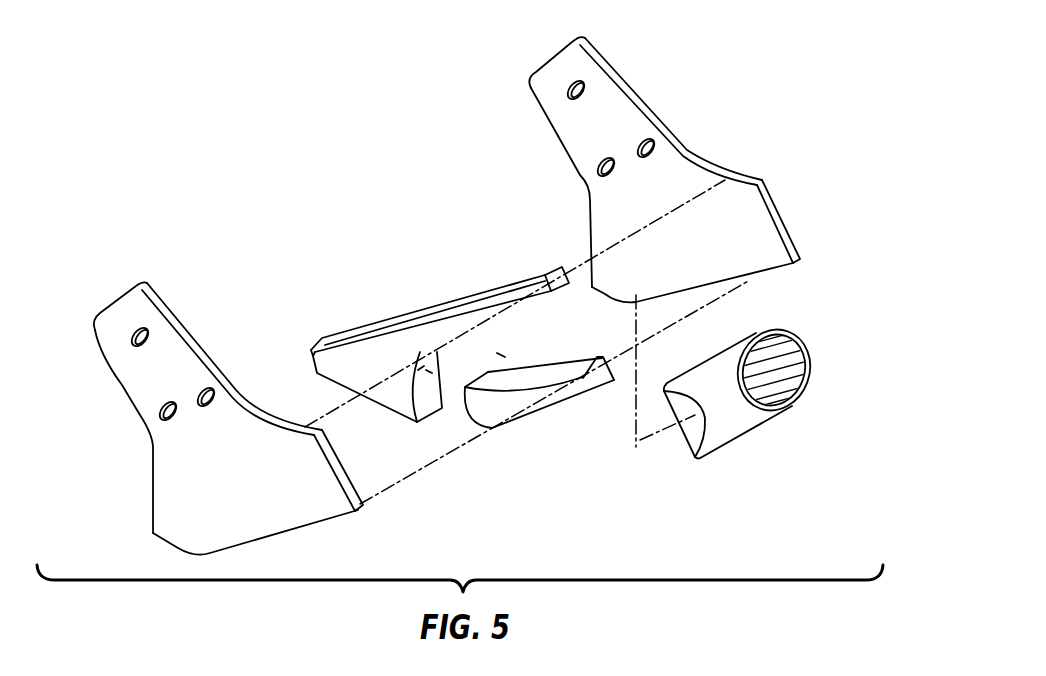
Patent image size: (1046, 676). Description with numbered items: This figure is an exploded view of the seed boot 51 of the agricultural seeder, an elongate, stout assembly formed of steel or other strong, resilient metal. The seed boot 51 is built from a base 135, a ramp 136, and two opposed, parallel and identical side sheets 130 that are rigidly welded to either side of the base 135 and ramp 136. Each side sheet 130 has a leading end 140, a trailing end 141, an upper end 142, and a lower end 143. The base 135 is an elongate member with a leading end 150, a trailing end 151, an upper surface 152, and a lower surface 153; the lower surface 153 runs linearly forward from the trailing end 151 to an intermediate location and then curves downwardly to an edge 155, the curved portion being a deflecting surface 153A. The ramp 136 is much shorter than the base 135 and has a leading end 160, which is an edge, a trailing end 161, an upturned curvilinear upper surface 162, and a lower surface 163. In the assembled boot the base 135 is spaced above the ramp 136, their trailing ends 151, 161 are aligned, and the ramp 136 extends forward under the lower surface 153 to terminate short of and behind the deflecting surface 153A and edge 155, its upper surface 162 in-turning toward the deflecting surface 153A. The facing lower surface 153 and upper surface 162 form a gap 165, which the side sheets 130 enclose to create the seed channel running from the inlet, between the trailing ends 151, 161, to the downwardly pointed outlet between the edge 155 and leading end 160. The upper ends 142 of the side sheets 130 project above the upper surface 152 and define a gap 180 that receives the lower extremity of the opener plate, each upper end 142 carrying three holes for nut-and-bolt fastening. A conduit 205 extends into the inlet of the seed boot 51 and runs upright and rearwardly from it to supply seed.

The seed boot 51 is at (786, 56).
The side sheet 130 is at (185, 353).
The base 135 is at (404, 337).
The ramp 136 is at (540, 410).
The leading end 140 is at (475, 318).
The trailing end 141 is at (345, 505).
The upper end 142 is at (142, 310).
The lower end 143 is at (267, 533).
The leading end 150 is at (436, 315).
The trailing end 151 is at (553, 268).
The upper surface 152 is at (379, 332).
The lower surface 153 is at (484, 326).
The deflecting surface 153A is at (419, 371).
The edge 155 is at (432, 373).
The leading end 160 is at (555, 435).
The trailing end 161 is at (603, 380).
The upper surface 162 is at (530, 378).
The lower surface 163 is at (525, 428).
The gap 165 is at (500, 447).
The gap 180 is at (473, 311).
The conduit 205 is at (760, 435).